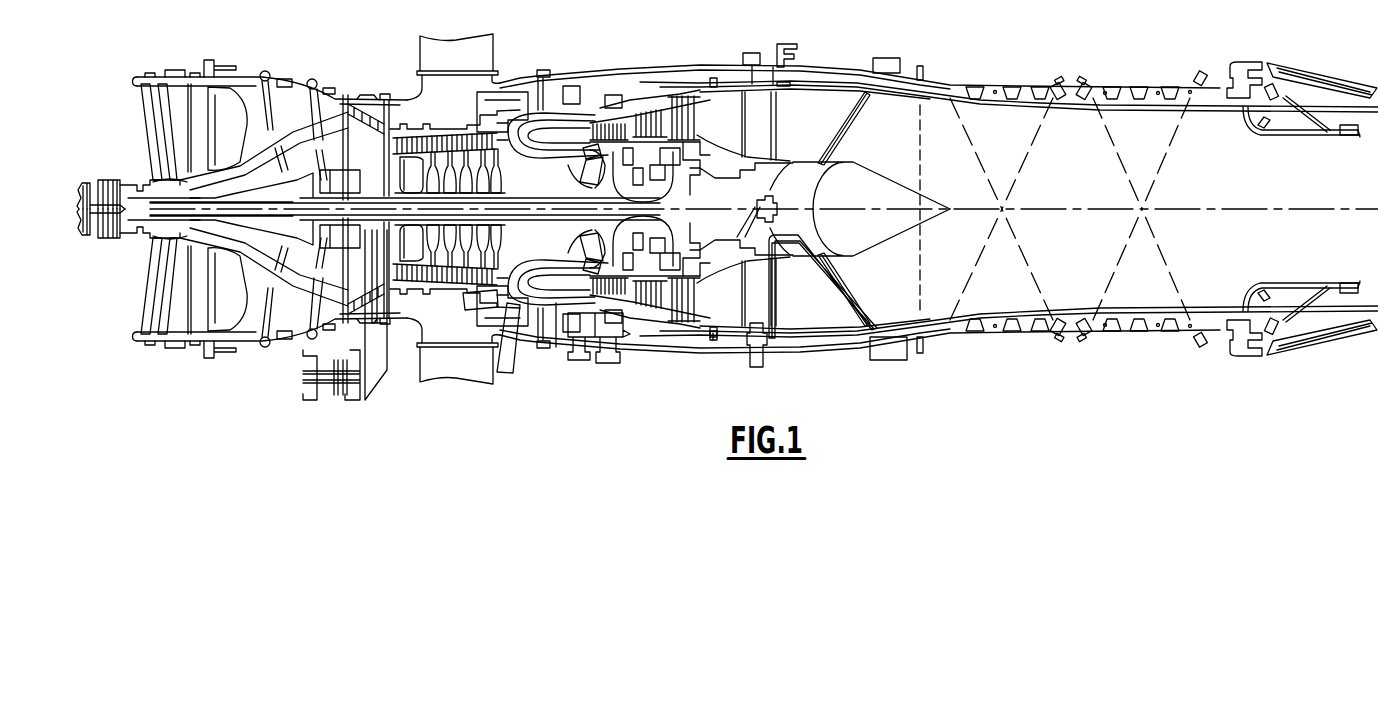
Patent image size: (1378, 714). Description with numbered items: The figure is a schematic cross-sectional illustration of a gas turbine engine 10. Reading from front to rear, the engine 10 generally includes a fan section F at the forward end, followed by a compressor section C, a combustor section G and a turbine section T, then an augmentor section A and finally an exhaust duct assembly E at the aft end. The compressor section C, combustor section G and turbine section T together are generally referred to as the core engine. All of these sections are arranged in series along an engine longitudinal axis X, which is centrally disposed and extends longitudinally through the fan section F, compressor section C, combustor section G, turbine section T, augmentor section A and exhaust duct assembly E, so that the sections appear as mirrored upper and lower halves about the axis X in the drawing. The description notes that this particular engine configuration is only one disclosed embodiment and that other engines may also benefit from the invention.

The gas turbine engine 10 is at (727, 226).
The fan section F is at (289, 65).
The compressor section C is at (460, 92).
The combustor section G is at (576, 125).
The turbine section T is at (695, 108).
The augmentor section A is at (851, 125).
The exhaust duct assembly E is at (1118, 72).
The engine longitudinal axis X is at (1330, 211).